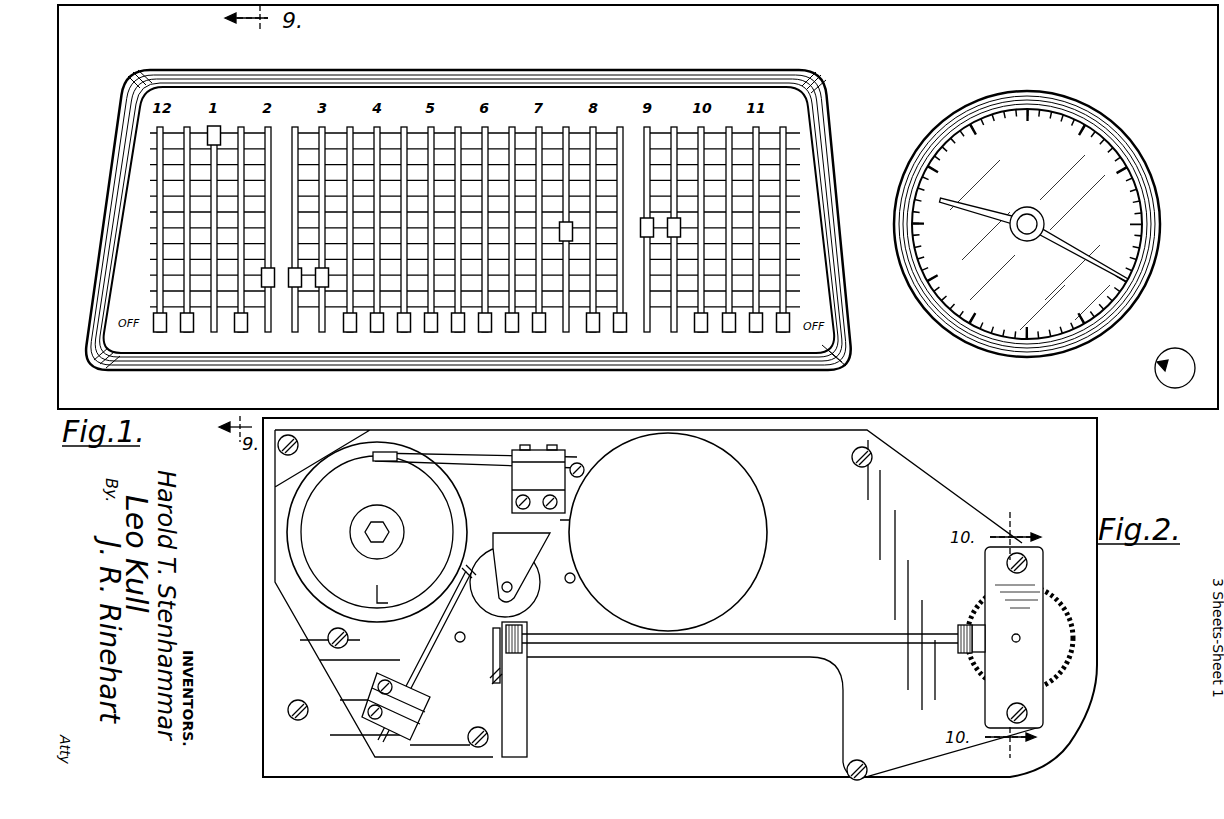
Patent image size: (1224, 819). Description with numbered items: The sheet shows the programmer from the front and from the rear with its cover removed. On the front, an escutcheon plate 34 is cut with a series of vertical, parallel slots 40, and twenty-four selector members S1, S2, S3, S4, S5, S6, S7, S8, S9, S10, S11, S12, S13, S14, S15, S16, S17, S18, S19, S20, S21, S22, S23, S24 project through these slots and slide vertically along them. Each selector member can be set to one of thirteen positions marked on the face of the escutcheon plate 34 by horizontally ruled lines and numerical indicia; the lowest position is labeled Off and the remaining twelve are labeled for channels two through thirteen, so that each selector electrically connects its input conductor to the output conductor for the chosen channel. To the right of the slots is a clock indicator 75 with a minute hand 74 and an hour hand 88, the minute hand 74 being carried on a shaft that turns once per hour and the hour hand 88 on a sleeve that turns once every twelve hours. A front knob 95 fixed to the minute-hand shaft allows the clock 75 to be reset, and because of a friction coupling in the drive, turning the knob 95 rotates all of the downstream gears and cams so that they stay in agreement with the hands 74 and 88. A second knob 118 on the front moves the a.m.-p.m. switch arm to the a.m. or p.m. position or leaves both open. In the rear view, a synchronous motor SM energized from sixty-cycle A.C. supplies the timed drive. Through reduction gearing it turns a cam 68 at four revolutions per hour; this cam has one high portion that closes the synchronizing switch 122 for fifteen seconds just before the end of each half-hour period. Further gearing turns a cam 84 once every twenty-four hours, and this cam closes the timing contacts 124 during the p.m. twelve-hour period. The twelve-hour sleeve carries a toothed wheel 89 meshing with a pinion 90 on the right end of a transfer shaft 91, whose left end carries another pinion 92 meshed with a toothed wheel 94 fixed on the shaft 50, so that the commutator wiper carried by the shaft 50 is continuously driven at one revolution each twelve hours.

In FIG. 1, the escutcheon plate 34 is at (403, 98).
In FIG. 1, the vertical parallel slots 40 is at (212, 260).
In FIG. 1, the selector member S1 is at (158, 239).
In FIG. 1, the selector member S2 is at (185, 239).
In FIG. 1, the selector member S3 is at (219, 135).
In FIG. 1, the selector member S4 is at (238, 239).
In FIG. 1, the selector member S5 is at (260, 288).
In FIG. 1, the selector member S6 is at (290, 288).
In FIG. 1, the selector member S7 is at (316, 288).
In FIG. 1, the selector member S8 is at (348, 239).
In FIG. 1, the selector member S9 is at (375, 239).
In FIG. 1, the selector member S10 is at (402, 239).
In FIG. 1, the selector member S11 is at (429, 239).
In FIG. 1, the selector member S12 is at (456, 239).
In FIG. 1, the selector member S13 is at (483, 239).
In FIG. 1, the selector member S14 is at (510, 239).
In FIG. 1, the selector member S15 is at (537, 239).
In FIG. 1, the selector member S16 is at (569, 226).
In FIG. 1, the selector member S17 is at (592, 239).
In FIG. 1, the selector member S18 is at (620, 239).
In FIG. 1, the selector member S19 is at (652, 220).
In FIG. 1, the selector member S20 is at (678, 220).
In FIG. 1, the selector member S21 is at (699, 239).
In FIG. 1, the selector member S22 is at (727, 239).
In FIG. 1, the selector member S23 is at (754, 239).
In FIG. 1, the selector member S24 is at (781, 239).
In FIG. 1, the clock indicator 75 is at (952, 346).
In FIG. 1, the hour hand 88 is at (988, 210).
In FIG. 1, the minute hand 74 is at (1088, 266).
In FIG. 1, the front knob 95 is at (1040, 214).
In FIG. 1, the a.m.-p.m. selector knob 118 is at (1183, 380).
In FIG. 2, the synchronous motor SM is at (685, 546).
In FIG. 2, the cam 84 is at (377, 532).
In FIG. 2, the timing contacts 124 is at (382, 455).
In FIG. 2, the cam 68 is at (530, 590).
In FIG. 2, the synchronizing switch 122 is at (447, 616).
In FIG. 2, the toothed wheel 89 is at (500, 668).
In FIG. 2, the transfer shaft 91 is at (708, 645).
In FIG. 2, the pinion 90 is at (522, 651).
In FIG. 2, the toothed wheel 94 is at (975, 608).
In FIG. 2, the shaft 50 is at (1020, 636).
In FIG. 2, the pinion 92 is at (963, 652).